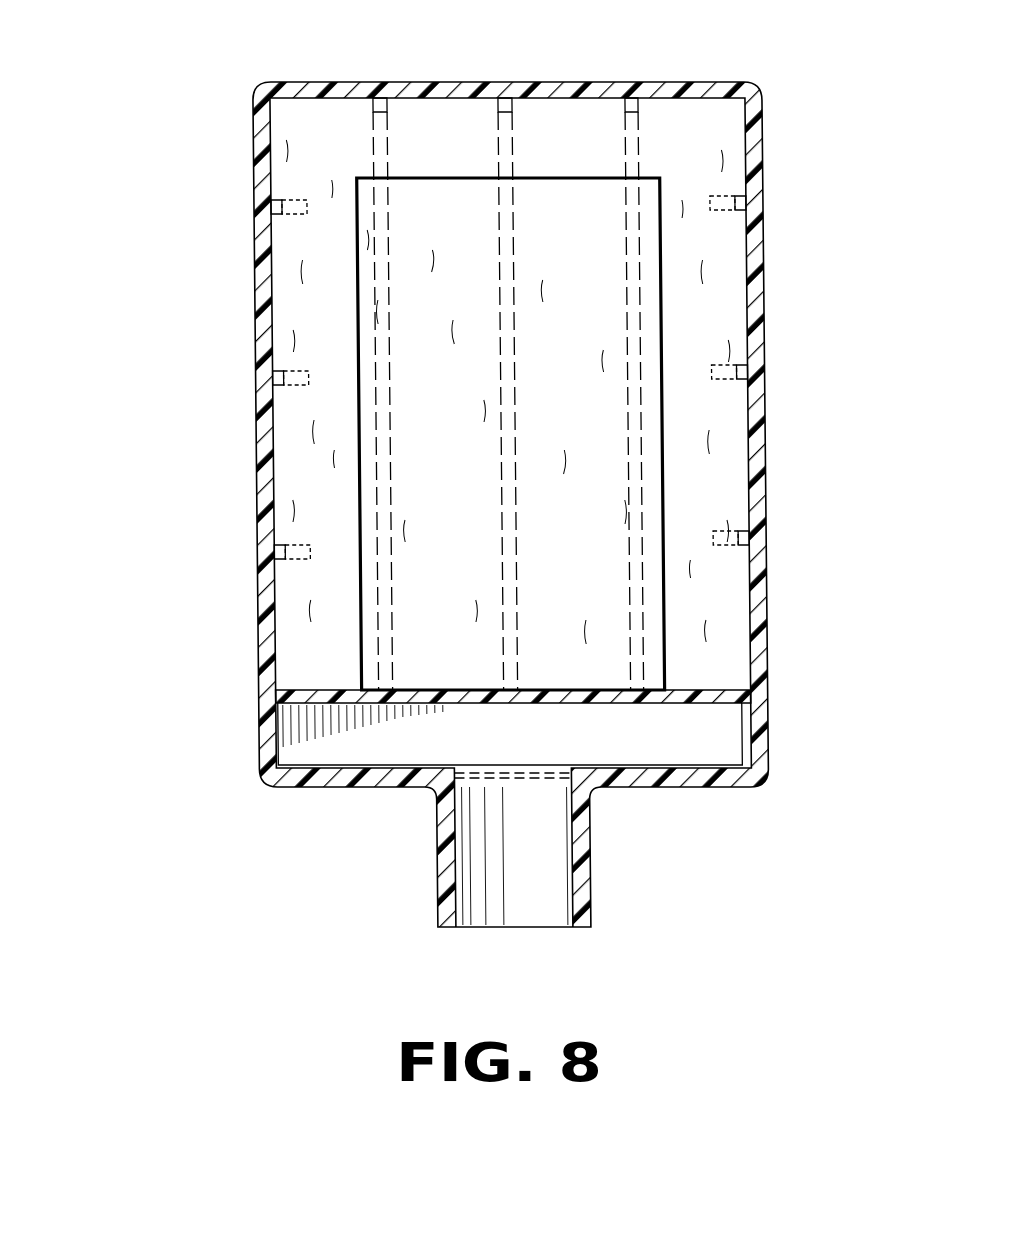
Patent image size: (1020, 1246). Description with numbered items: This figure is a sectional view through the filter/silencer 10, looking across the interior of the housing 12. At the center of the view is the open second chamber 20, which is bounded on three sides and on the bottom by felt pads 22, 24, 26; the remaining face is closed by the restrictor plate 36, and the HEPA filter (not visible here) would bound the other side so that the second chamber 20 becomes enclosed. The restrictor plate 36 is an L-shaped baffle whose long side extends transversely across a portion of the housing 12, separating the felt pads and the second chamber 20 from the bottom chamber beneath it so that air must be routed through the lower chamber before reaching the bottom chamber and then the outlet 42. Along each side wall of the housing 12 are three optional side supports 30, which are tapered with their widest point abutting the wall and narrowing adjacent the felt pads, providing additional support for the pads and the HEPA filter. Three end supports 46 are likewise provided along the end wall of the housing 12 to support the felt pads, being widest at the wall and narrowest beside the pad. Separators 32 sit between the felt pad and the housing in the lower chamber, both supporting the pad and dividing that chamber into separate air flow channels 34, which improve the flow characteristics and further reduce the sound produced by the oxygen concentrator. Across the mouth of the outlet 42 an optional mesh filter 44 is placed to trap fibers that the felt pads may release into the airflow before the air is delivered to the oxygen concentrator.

The filter/silencer 10 is at (110, 174).
The housing 12 is at (768, 634).
The second chamber 20 is at (579, 640).
The felt pad 22 is at (405, 667).
The felt pad 24 is at (295, 158).
The felt pad 26 is at (287, 440).
The side supports 30 is at (275, 207).
The separators 32 is at (383, 165).
The air flow channels 34 is at (367, 217).
The restrictor plate 36 is at (700, 697).
The outlet 42 is at (587, 878).
The mesh filter 44 is at (500, 775).
The end supports 46 is at (378, 100).